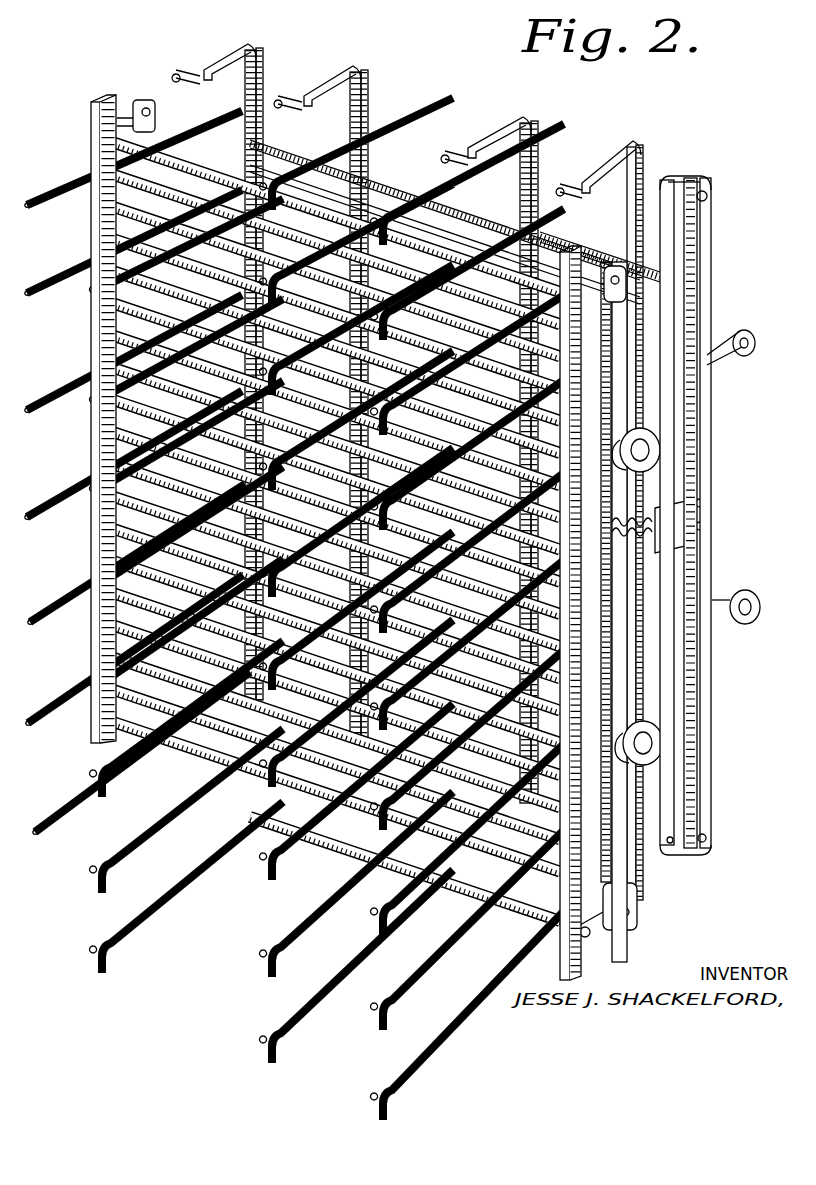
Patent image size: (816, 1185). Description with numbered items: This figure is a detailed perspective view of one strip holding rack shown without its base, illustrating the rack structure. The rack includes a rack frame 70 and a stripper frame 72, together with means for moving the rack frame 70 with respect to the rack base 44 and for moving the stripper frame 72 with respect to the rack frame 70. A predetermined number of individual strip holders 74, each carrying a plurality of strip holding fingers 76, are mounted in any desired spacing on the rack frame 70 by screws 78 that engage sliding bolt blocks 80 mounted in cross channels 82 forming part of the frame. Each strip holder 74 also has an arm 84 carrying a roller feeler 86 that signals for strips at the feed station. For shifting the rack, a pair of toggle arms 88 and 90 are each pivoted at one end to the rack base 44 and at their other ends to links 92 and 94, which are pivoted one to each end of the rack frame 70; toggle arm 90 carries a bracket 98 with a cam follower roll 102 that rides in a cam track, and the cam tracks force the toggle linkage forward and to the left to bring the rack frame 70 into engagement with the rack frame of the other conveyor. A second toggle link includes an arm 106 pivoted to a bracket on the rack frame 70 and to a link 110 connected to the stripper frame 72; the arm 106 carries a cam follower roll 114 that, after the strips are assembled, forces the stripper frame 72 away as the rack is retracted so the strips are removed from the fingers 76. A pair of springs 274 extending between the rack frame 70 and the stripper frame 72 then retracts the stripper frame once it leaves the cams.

The rack base 44 is at (708, 514).
The rack frame 70 is at (146, 98).
The stripper frame 72 is at (89, 228).
The strip holder 74 is at (262, 62).
The strip holding fingers 76 is at (48, 196).
The screws 78 is at (372, 198).
The sliding bolt blocks 80 is at (278, 152).
The cross channels 82 is at (556, 234).
The arm 84 is at (236, 45).
The roller feeler 86 is at (178, 66).
The toggle arm 88 is at (704, 420).
The toggle arm 90 is at (712, 690).
The link 92 is at (690, 178).
The link 94 is at (706, 850).
The bracket 98 is at (726, 632).
The cam follower roll 102 is at (748, 588).
The arm 106 is at (620, 285).
The link 110 is at (468, 258).
The cam follower roll 114 is at (648, 748).
The springs 274 is at (690, 490).